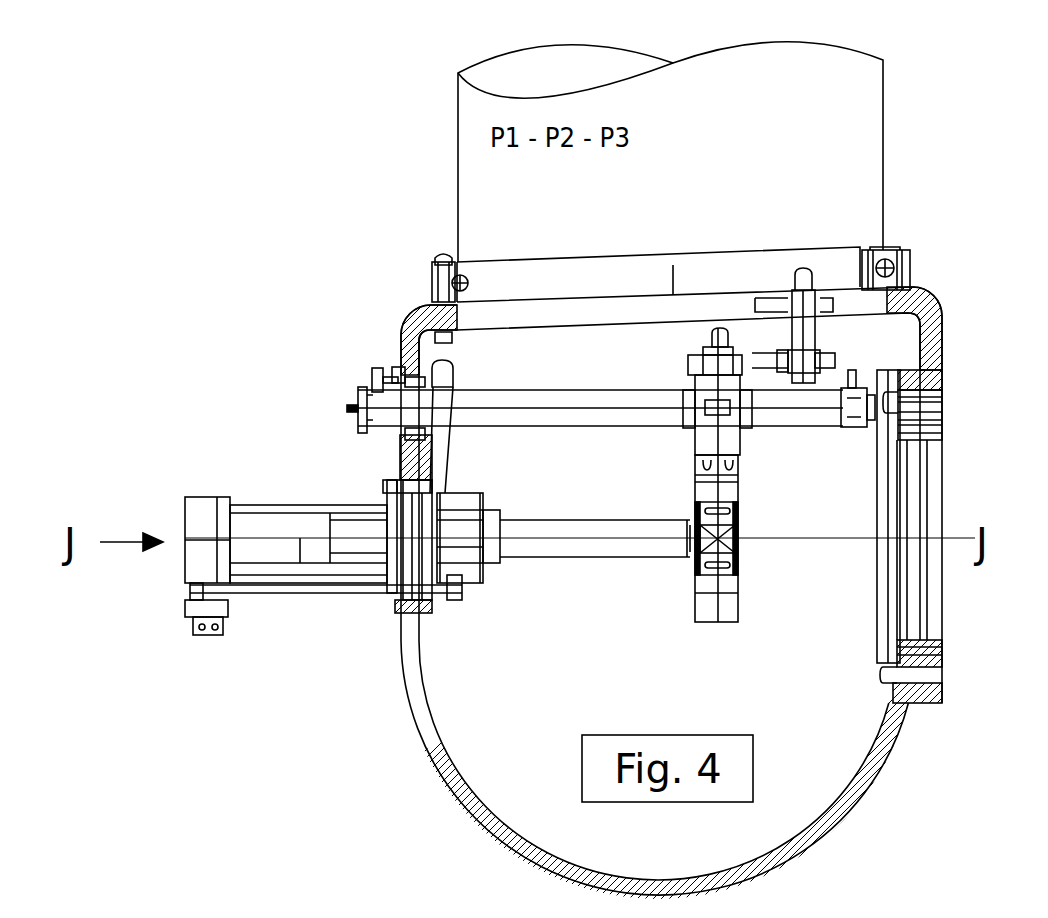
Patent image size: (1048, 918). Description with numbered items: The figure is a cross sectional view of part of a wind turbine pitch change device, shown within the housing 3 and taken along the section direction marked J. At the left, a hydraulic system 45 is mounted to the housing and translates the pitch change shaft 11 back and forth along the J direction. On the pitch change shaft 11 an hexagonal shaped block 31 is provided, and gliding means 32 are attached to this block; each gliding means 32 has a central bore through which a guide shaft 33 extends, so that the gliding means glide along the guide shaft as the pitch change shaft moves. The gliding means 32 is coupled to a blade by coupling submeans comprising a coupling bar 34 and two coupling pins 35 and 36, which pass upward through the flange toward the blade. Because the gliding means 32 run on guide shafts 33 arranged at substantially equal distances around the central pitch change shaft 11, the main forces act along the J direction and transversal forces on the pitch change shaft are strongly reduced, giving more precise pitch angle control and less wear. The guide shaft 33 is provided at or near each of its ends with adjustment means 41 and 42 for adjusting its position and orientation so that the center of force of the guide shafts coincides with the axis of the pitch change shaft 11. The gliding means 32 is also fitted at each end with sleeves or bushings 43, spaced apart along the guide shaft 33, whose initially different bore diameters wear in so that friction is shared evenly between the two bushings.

The vessel 3 is at (462, 813).
The pitch change shaft 11 is at (598, 553).
The hexagonal shaped block 31 is at (715, 622).
The gliding means 32 is at (745, 448).
The guide shaft 33 is at (523, 428).
The coupling bar 34 is at (762, 338).
The coupling pin 35 is at (720, 311).
The coupling pin 36 is at (803, 255).
The adjustment means 41 is at (377, 368).
The adjustment means 42 is at (848, 372).
The sleeves or bushings 43 is at (702, 350).
The hydraulic system 45 is at (288, 500).